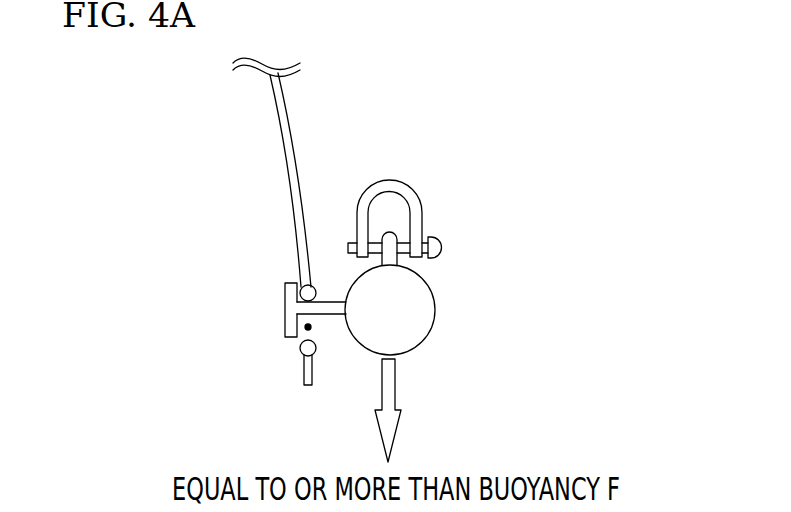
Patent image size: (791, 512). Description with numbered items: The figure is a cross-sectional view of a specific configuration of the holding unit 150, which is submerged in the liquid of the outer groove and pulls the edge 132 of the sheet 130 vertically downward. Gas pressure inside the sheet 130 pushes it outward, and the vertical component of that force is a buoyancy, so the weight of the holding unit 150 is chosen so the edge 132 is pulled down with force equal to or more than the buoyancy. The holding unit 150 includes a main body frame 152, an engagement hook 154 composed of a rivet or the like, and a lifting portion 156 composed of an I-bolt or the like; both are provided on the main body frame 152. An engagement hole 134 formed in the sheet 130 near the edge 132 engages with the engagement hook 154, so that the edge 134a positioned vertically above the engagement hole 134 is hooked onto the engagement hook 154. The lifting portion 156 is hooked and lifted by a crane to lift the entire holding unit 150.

The sheet 130 is at (274, 112).
The edge 132 is at (300, 393).
The engagement hole 134 is at (255, 292).
The edge 134a is at (303, 285).
The holding unit 150 is at (426, 216).
The main body frame 152 is at (417, 322).
The engagement hook 154 is at (285, 303).
The lifting portion 156 is at (421, 206).